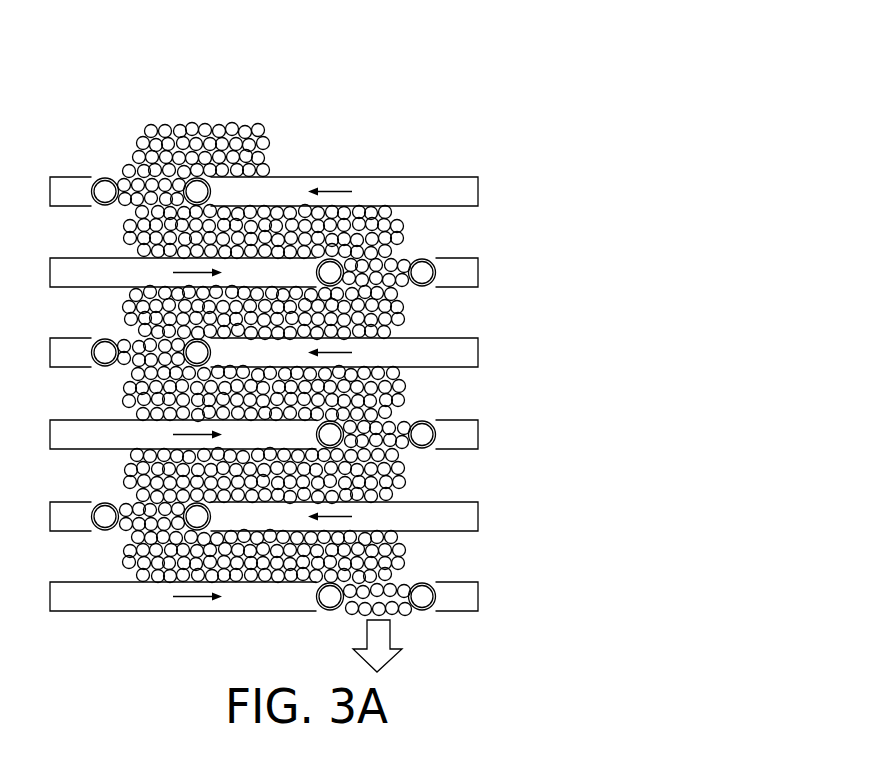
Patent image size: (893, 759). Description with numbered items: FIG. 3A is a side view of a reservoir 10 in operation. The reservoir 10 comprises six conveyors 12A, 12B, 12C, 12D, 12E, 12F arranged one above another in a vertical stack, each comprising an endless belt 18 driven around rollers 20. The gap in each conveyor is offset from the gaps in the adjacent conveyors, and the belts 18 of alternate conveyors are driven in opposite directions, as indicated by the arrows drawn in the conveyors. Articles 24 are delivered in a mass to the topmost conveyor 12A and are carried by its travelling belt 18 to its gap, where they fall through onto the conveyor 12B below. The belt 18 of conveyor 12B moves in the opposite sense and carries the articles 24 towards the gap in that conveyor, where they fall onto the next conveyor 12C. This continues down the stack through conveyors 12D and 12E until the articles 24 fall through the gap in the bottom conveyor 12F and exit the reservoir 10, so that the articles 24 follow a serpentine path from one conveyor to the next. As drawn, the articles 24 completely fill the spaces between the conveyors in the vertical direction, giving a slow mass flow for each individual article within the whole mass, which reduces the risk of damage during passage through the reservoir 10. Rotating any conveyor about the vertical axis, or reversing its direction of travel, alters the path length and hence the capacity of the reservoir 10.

The reservoir 10 is at (124, 77).
The topmost conveyor 12A is at (301, 186).
The second conveyor 12B is at (466, 271).
The third conveyor 12C is at (466, 351).
The fourth conveyor 12D is at (466, 433).
The fifth conveyor 12E is at (466, 515).
The bottom conveyor 12F is at (466, 595).
The endless belt 18 is at (70, 177).
The roller 20 is at (109, 200).
The articles 24 is at (218, 133).